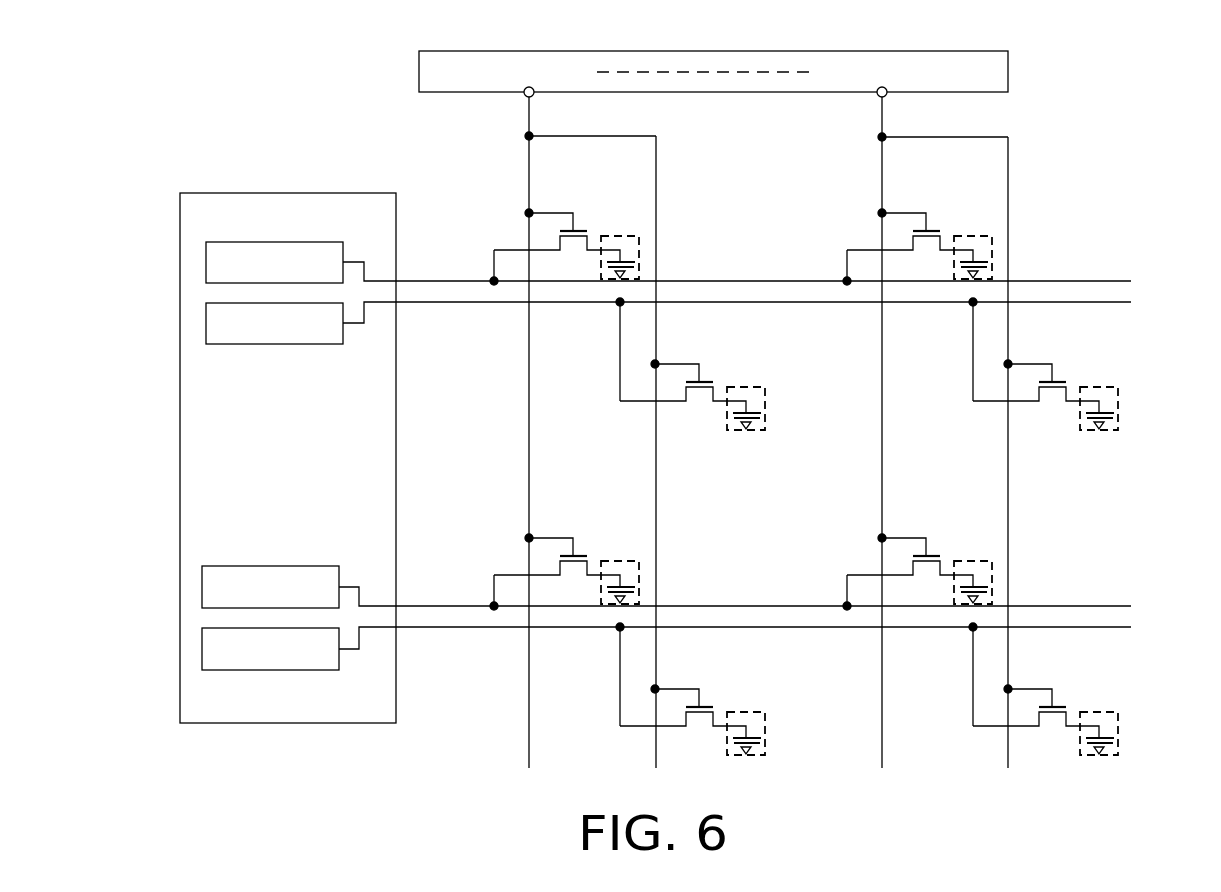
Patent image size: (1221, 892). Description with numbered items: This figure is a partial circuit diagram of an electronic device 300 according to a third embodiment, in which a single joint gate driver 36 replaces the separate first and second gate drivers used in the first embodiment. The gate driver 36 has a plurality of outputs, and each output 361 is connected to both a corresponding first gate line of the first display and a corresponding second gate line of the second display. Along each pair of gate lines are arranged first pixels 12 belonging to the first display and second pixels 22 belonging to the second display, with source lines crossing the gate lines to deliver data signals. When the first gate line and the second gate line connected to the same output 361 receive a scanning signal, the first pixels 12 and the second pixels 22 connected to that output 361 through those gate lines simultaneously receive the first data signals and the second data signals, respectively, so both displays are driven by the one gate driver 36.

The electronic device 300 is at (238, 94).
The joint gate driver 36 is at (687, 51).
The output 361 is at (532, 96).
The first pixel 12 is at (627, 264).
The second pixel 22 is at (760, 417).